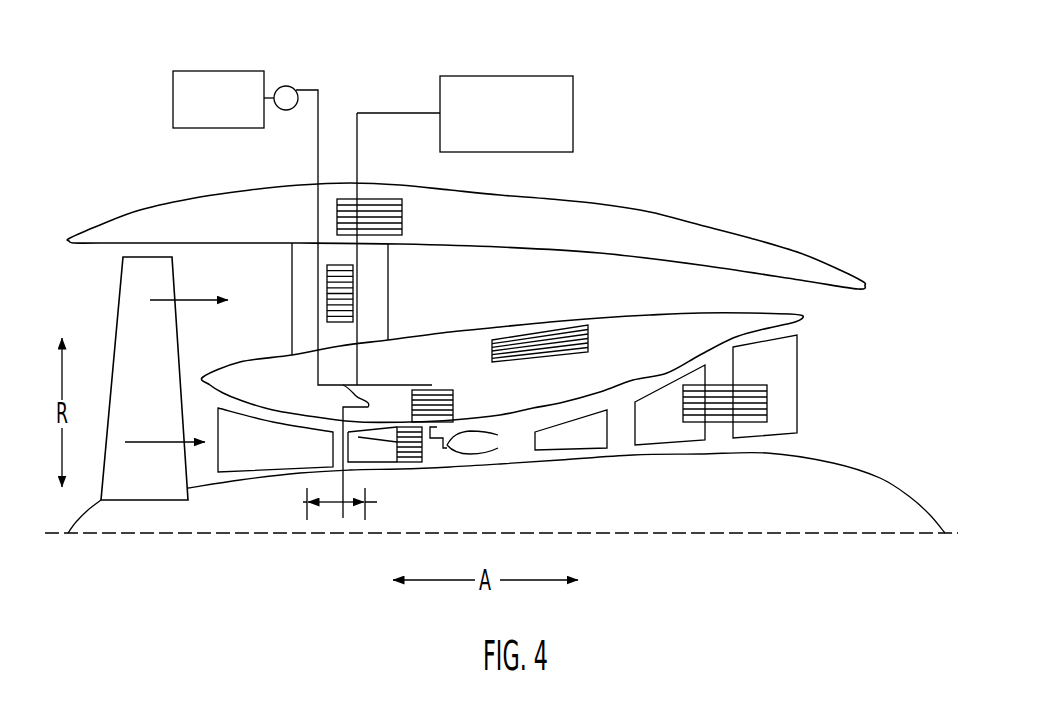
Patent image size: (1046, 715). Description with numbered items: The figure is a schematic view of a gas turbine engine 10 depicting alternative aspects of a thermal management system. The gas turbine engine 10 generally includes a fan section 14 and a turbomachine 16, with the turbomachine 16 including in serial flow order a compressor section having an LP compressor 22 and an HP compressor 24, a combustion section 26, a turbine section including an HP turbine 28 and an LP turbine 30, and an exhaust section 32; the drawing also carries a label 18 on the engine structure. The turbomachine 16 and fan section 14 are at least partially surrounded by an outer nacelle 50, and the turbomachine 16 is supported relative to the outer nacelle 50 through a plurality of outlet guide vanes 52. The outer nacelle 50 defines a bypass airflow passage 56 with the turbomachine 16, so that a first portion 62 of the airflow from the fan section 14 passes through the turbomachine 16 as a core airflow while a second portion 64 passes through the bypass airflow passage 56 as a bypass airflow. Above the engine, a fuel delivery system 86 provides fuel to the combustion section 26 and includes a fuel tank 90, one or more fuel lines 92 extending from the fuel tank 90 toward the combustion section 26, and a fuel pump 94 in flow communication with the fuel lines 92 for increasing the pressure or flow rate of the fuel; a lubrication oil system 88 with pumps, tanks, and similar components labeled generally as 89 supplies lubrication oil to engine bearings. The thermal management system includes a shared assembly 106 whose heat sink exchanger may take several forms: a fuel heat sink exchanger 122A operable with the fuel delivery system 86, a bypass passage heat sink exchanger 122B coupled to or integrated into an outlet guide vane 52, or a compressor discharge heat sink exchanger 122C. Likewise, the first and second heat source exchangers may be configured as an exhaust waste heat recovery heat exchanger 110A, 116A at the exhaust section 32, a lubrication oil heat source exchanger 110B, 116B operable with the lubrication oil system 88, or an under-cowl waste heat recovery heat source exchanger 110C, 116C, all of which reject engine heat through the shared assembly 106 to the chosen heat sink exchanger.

The gas turbine engine 10 is at (112, 166).
The fan section 14 is at (103, 336).
The turbomachine 16 is at (500, 346).
The outer casing 18 is at (579, 259).
The LP compressor 22 is at (282, 462).
The HP compressor 24 is at (358, 437).
The combustion section 26 is at (478, 464).
The HP turbine 28 is at (578, 440).
The LP turbine 30 is at (645, 435).
The exhaust section 32 is at (790, 375).
The outer nacelle 50 is at (338, 185).
The outlet guide vanes 52 is at (388, 303).
The bypass airflow passage 56 is at (670, 302).
The first portion of airflow 62 is at (172, 440).
The second portion of airflow 64 is at (192, 298).
The fuel delivery system 86 is at (336, 87).
The lubrication oil system 88 is at (402, 97).
The pumps, tanks, etc. of the lubrication oil system 89 is at (508, 123).
The fuel tank 90 is at (225, 112).
The fuel lines 92 is at (318, 168).
The fuel pump 94 is at (287, 87).
The shared assembly 106 is at (443, 330).
The exhaust waste heat recovery heat exchanger 110A is at (814, 403).
The lubrication oil heat source exchanger 110B is at (442, 219).
The under-cowl waste heat recovery heat source exchanger 110C is at (540, 307).
The exhaust waste heat recovery heat exchanger 116A is at (767, 386).
The lubrication oil heat source exchanger 116B is at (402, 214).
The under-cowl waste heat recovery heat source exchanger 116C is at (540, 307).
The fuel heat sink exchanger 122A is at (453, 413).
The bypass passage heat sink exchanger 122B is at (353, 300).
The compressor discharge heat sink exchanger 122C is at (427, 452).